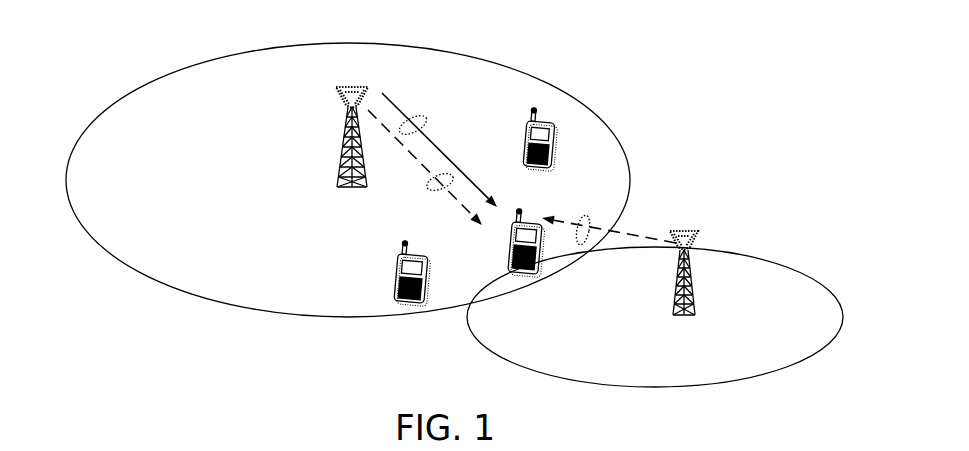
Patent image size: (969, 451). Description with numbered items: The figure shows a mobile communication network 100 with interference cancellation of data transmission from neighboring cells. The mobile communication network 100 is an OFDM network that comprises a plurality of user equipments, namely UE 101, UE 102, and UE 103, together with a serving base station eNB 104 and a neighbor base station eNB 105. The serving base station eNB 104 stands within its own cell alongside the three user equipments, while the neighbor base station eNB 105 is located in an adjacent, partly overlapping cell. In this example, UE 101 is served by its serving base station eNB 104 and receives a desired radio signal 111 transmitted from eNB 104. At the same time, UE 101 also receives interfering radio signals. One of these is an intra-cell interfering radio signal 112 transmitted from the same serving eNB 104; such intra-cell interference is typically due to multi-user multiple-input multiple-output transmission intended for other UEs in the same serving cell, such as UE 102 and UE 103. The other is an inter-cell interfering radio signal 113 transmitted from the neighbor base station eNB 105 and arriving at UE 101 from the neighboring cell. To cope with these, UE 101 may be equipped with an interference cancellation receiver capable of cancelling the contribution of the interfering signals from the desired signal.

The mobile communication network 100 is at (805, 47).
The user equipment 101 is at (503, 242).
The user equipment 102 is at (384, 273).
The user equipment 103 is at (541, 132).
The serving base station 104 is at (352, 86).
The neighbor base station 105 is at (684, 231).
The desired radio signal 111 is at (424, 118).
The intra-cell interfering radio signal 112 is at (434, 188).
The inter-cell interfering radio signal 113 is at (584, 216).